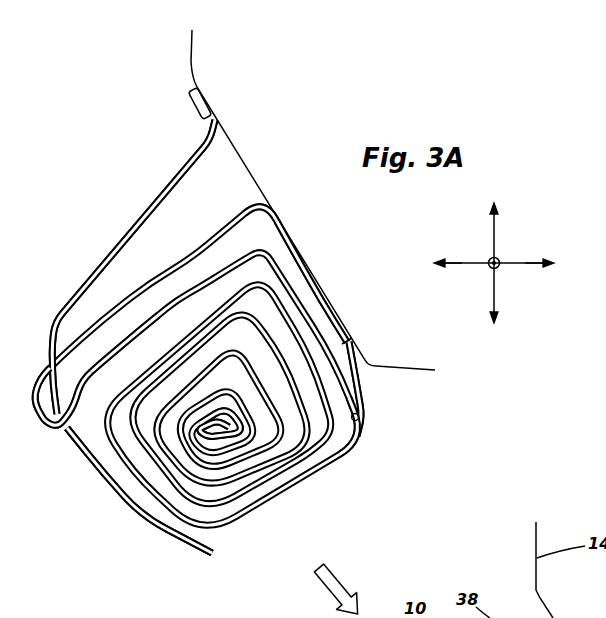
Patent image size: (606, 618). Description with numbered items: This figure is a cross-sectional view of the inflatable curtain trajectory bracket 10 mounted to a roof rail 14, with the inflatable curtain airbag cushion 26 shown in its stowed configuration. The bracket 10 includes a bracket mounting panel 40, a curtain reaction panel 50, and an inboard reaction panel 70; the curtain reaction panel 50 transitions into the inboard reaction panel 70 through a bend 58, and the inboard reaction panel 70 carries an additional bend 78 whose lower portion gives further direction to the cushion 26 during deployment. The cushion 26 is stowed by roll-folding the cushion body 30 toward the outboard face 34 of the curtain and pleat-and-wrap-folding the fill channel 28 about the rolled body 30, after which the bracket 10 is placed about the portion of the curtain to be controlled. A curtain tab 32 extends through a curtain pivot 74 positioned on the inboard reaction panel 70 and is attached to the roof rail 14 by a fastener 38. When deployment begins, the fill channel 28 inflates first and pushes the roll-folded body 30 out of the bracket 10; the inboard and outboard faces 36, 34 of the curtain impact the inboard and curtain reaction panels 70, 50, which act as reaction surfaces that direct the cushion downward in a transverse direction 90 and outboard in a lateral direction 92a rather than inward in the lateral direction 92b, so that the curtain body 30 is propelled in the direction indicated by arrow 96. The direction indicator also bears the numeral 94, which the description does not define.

The inflatable curtain trajectory bracket 10 is at (83, 107).
The roof rail 14 is at (192, 40).
The inflatable curtain airbag cushion 26 is at (273, 518).
The fill channel 28 is at (120, 340).
The cushion body 30 is at (263, 418).
The curtain tab 32 is at (130, 228).
The outboard face 34 is at (355, 390).
The inboard face 36 is at (359, 420).
The fastener 38 is at (190, 100).
The bracket mounting panel 40 is at (297, 253).
The curtain reaction panel 50 is at (212, 238).
The bend 58 is at (50, 378).
The inboard reaction panel 70 is at (105, 490).
The curtain pivot 74 is at (63, 433).
The bend 78 is at (142, 527).
The transverse direction 90 is at (497, 226).
The lateral direction 92a is at (518, 266).
The lateral direction 92b is at (462, 266).
The axis origin 94 is at (488, 257).
The arrow 96 is at (333, 583).